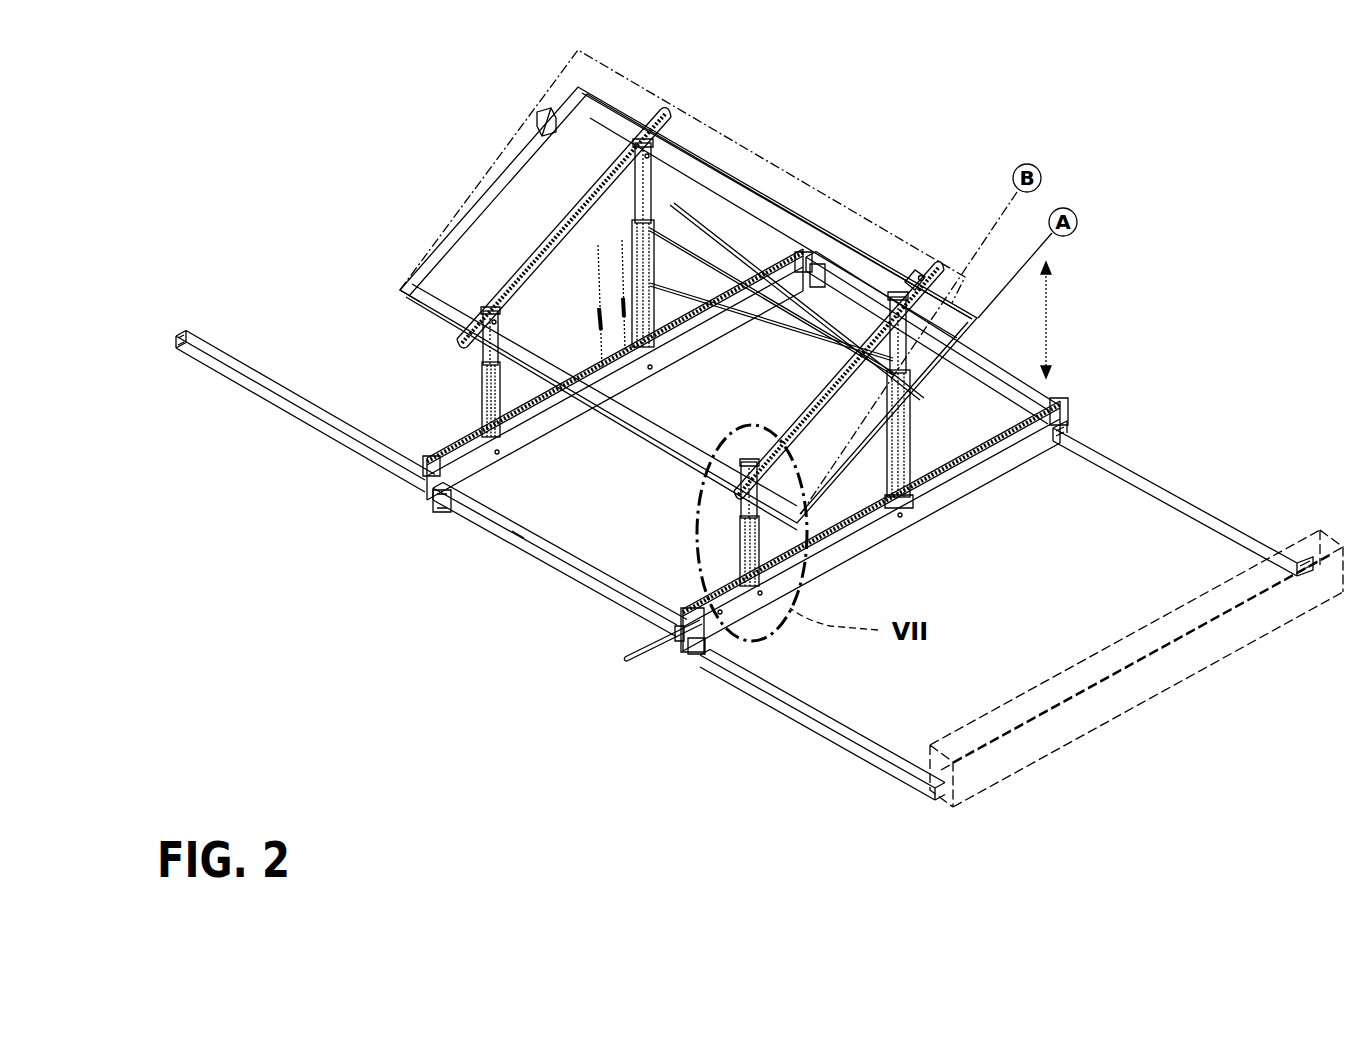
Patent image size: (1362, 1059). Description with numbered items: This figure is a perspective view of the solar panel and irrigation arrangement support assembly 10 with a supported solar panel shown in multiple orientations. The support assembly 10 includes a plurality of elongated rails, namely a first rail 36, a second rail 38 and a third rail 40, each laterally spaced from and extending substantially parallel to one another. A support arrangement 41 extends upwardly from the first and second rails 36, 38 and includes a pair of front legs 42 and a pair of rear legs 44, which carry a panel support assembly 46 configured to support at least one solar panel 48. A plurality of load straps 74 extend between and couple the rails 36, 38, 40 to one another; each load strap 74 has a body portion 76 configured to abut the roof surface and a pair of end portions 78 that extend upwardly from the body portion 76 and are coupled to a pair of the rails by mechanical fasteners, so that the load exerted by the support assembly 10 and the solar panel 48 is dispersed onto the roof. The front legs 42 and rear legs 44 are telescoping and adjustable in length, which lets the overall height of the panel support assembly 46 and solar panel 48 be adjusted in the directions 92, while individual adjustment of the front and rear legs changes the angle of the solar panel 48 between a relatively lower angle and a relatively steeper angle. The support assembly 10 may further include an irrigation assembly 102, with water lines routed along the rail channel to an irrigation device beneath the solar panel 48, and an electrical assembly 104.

The support assembly 10 is at (474, 111).
The first rail 36 is at (454, 436).
The second rail 38 is at (717, 576).
The third rail 40 is at (1000, 706).
The support arrangement 41 is at (405, 322).
The front legs 42 is at (478, 385).
The rear legs 44 is at (662, 171).
The panel support assembly 46 is at (913, 270).
The solar panel 48 is at (762, 158).
The load straps 74 is at (255, 399).
The body portion 76 is at (518, 536).
The end portions 78 is at (440, 512).
The directions 92 is at (1049, 330).
The irrigation assembly 102 is at (906, 484).
The electrical assembly 104 is at (578, 358).